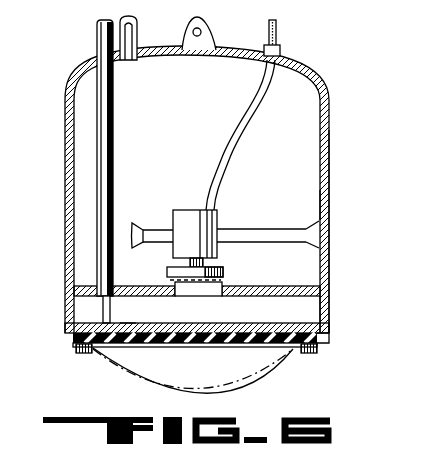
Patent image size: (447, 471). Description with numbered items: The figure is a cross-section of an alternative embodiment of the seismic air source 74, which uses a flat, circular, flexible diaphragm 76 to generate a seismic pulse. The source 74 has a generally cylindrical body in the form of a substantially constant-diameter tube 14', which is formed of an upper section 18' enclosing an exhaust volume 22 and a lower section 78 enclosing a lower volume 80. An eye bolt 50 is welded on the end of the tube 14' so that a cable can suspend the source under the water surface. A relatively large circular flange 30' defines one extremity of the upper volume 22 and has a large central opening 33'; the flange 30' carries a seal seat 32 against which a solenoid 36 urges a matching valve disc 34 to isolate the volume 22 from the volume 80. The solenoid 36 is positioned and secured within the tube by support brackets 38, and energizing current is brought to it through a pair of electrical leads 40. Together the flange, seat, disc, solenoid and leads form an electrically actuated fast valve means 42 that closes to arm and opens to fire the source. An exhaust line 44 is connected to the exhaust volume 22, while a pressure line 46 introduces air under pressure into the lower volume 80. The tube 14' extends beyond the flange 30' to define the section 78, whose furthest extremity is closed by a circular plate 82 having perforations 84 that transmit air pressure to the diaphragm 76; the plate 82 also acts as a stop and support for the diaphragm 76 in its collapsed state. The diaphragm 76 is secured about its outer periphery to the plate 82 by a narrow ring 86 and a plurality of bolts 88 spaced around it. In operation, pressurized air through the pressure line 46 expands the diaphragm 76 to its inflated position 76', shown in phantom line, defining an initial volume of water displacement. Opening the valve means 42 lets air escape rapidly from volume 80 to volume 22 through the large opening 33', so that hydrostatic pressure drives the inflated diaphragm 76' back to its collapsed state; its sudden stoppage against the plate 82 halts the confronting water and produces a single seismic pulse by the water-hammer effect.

The tube 14' is at (368, 231).
The upper section 18' is at (227, 189).
The exhaust volume 22 is at (202, 116).
The circular flange 30' is at (231, 281).
The seal seat 32 is at (224, 281).
The central opening 33' is at (179, 302).
The valve disc 34 is at (221, 268).
The solenoid 36 is at (192, 212).
The support brackets 38 is at (256, 231).
The electrical leads 40 is at (274, 33).
The valve means 42 is at (165, 256).
The exhaust line 44 is at (137, 23).
The pressure line 46 is at (103, 43).
The eye bolt 50 is at (218, 23).
The source 74 is at (352, 205).
The flexible diaphragm 76 is at (195, 363).
The inflated diaphragm position 76' is at (193, 369).
The lower section 78 is at (325, 307).
The lower volume 80 is at (213, 321).
The circular plate 82 is at (249, 325).
The perforations 84 is at (128, 323).
The narrow ring 86 is at (322, 342).
The bolts 88 is at (312, 351).